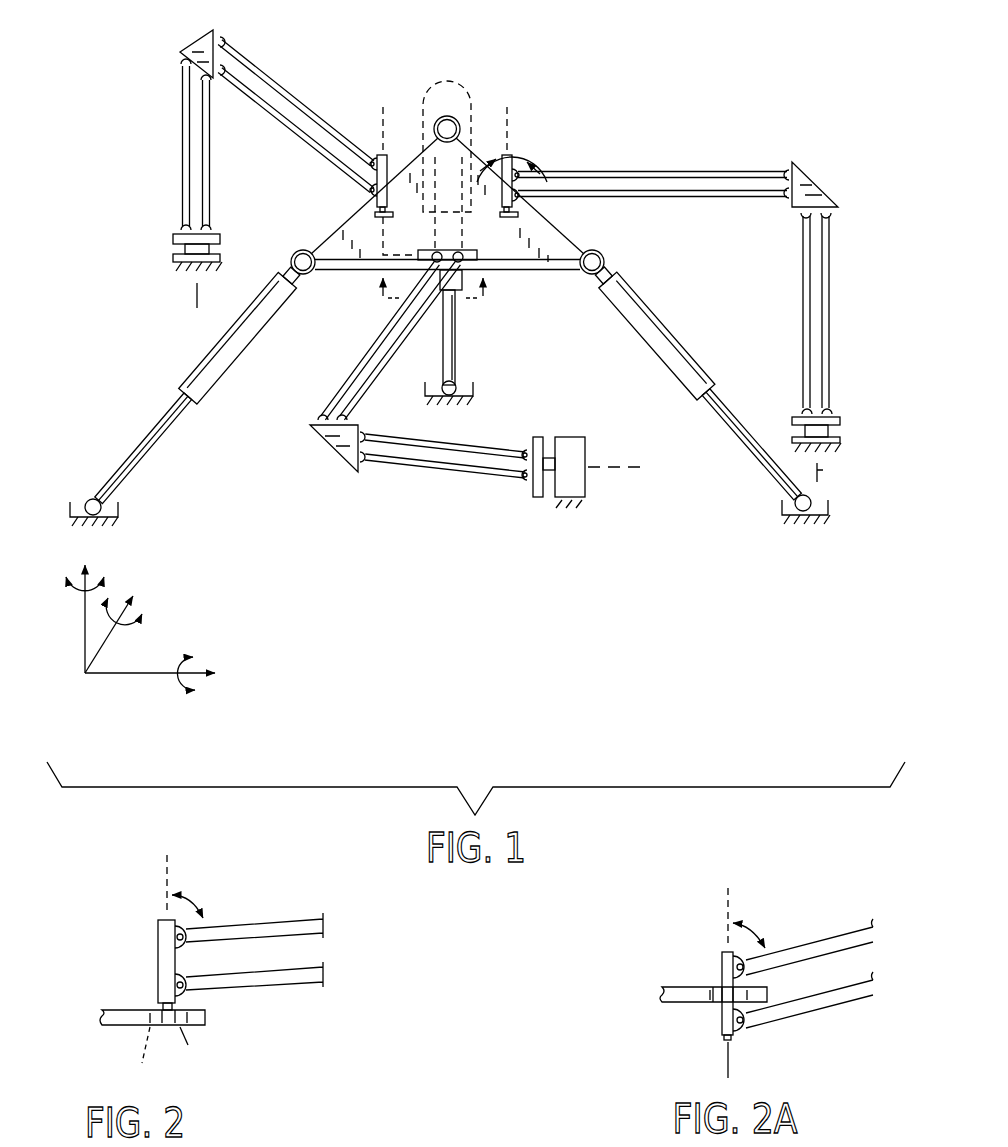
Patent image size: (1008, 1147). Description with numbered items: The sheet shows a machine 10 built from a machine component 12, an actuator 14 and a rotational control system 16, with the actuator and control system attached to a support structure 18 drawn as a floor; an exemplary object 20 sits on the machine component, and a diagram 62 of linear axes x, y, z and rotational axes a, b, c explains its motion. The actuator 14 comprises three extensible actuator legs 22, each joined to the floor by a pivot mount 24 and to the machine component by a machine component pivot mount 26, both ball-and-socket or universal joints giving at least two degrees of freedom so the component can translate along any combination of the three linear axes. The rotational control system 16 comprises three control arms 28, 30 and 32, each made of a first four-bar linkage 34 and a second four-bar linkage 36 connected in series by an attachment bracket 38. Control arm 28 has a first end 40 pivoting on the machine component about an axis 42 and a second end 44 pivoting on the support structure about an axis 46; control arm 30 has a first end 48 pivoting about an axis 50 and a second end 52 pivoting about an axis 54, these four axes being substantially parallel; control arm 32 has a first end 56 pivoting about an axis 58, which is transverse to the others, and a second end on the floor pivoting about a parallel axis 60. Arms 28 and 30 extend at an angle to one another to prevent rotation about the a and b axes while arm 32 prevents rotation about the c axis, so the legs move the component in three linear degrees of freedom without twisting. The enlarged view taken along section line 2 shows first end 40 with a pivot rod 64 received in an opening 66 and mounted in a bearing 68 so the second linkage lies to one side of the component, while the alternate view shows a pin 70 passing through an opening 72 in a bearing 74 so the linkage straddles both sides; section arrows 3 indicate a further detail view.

In FIG. 1, the section line 2— 2 is at (512, 157).
In FIG. 1, the section line 3- 3 is at (434, 287).
In FIG. 1, the machine 10 is at (534, 72).
In FIG. 1, the machine component 12 is at (413, 165).
In FIG. 2, the machine component 12 is at (112, 1027).
In FIG. 2A, the machine component 12 is at (678, 1002).
In FIG. 1, the actuator 14 is at (176, 366).
In FIG. 1, the rotational control system 16 is at (237, 30).
In FIG. 1, the support structure 18 is at (815, 573).
In FIG. 1, the object 20 is at (447, 81).
In FIG. 1, the actuator leg 22 is at (695, 355).
In FIG. 1, the pivot mount 24 is at (830, 505).
In FIG. 1, the machine component pivot mount 26 is at (460, 118).
In FIG. 1, the control arm 28 is at (846, 216).
In FIG. 2, the control arm 28 is at (254, 908).
In FIG. 2A, the control arm 28 is at (820, 925).
In FIG. 1, the control arm 30 is at (173, 76).
In FIG. 1, the control arm 32 is at (366, 488).
In FIG. 1, the first four-bar linkage 34 is at (182, 148).
In FIG. 1, the second four-bar linkage 36 is at (300, 100).
In FIG. 2, the second four-bar linkage 36 is at (297, 985).
In FIG. 1, the attachment bracket 38 is at (204, 42).
In FIG. 2A, the attachment bracket 38 is at (817, 1003).
In FIG. 1, the first end 40 is at (508, 152).
In FIG. 2, the first end 40 is at (157, 933).
In FIG. 2A, the first end 40 is at (722, 958).
In FIG. 1, the axis 42 is at (507, 120).
In FIG. 2, the axis 42 is at (168, 868).
In FIG. 2A, the axis 42 is at (730, 896).
In FIG. 1, the second end 44 is at (842, 420).
In FIG. 1, the axis 46 is at (823, 470).
In FIG. 1, the first end 48 is at (375, 152).
In FIG. 1, the axis 50 is at (383, 106).
In FIG. 1, the second end 52 is at (172, 238).
In FIG. 1, the axis 54 is at (196, 290).
In FIG. 1, the first end 56 is at (362, 275).
In FIG. 1, the axis 58 is at (492, 254).
In FIG. 1, the axis 60 is at (647, 467).
In FIG. 1, the diagram 62 is at (98, 700).
In FIG. 2, the pivot rod 64 is at (160, 1003).
In FIG. 2, the opening 66 is at (188, 1045).
In FIG. 2, the bearing 68 is at (140, 1061).
In FIG. 2A, the pin 70 is at (735, 1040).
In FIG. 2A, the opening 72 is at (722, 1005).
In FIG. 2A, the bearing 74 is at (712, 985).